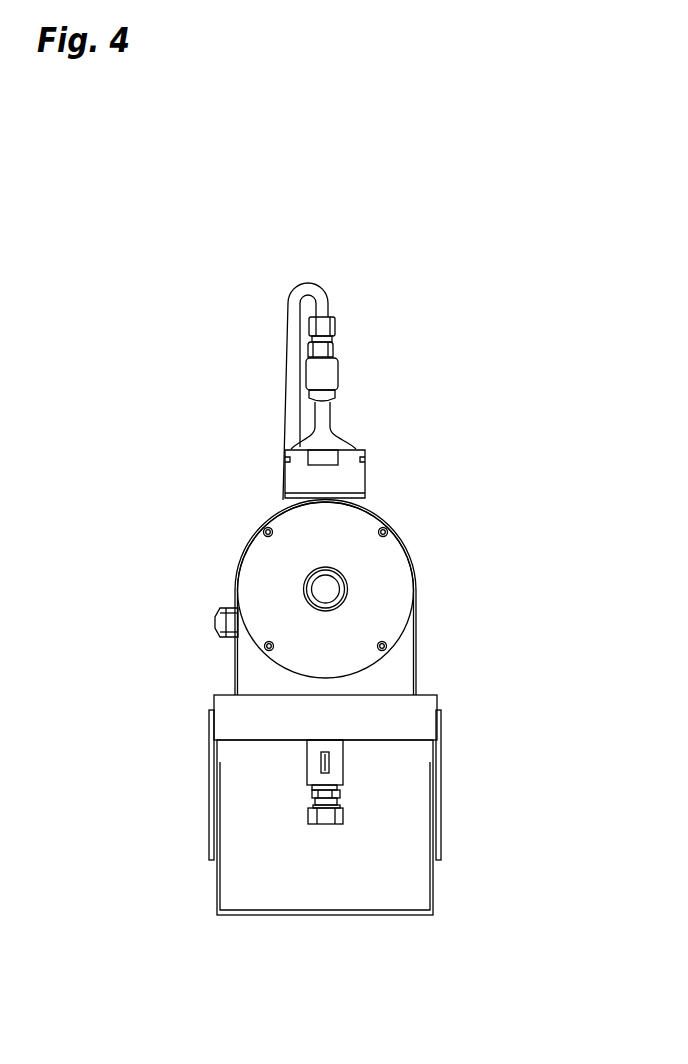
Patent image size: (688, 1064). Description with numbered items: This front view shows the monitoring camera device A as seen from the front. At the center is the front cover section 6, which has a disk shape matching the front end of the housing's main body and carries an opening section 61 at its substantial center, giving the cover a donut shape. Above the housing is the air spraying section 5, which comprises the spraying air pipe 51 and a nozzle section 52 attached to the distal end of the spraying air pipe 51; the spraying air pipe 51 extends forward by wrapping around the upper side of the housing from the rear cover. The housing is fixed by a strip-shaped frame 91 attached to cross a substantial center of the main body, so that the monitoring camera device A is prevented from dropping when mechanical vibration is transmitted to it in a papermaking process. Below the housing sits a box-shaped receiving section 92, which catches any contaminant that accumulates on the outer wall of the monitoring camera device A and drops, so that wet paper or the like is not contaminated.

The air spraying section 5 is at (468, 337).
The spraying air pipe 51 is at (335, 320).
The nozzle section 52 is at (366, 478).
The front cover section 6 is at (400, 574).
The opening section 61 is at (318, 595).
The frame 91 is at (415, 658).
The receiving section 92 is at (437, 703).
The monitoring camera device A is at (543, 392).